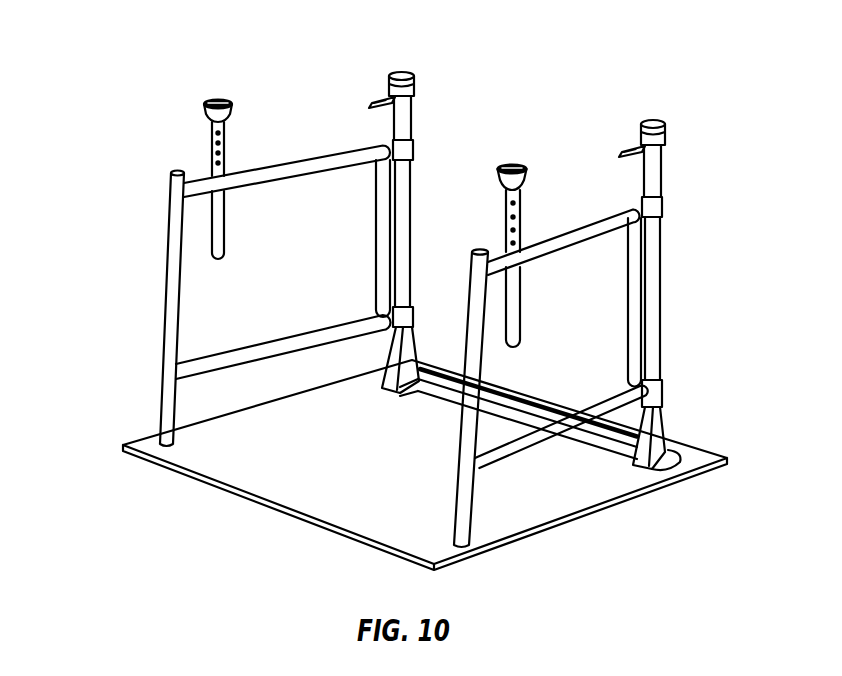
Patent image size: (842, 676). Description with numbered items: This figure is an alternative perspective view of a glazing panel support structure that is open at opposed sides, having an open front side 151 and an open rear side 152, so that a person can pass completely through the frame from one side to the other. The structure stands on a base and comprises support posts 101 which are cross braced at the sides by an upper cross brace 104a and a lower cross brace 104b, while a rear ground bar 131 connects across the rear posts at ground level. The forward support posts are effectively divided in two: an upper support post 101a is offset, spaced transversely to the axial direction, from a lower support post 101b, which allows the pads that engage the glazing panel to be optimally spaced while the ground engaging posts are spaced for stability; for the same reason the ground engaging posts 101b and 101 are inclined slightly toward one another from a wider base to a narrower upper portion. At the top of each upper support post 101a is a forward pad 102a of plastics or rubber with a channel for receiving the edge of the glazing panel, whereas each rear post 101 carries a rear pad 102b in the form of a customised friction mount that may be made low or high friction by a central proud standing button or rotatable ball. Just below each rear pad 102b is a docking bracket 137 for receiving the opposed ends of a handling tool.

The support post 101 is at (400, 203).
The upper support post 101a is at (211, 150).
The lower support post 101b is at (162, 305).
The forward pad 102a is at (205, 110).
The rear pad 102b is at (415, 92).
The upper cross brace 104a is at (293, 167).
The lower cross brace 104b is at (302, 345).
The rear ground bar 131 is at (530, 403).
The docking bracket 137 is at (380, 97).
The open front side 151 is at (150, 360).
The open rear side 152 is at (492, 143).